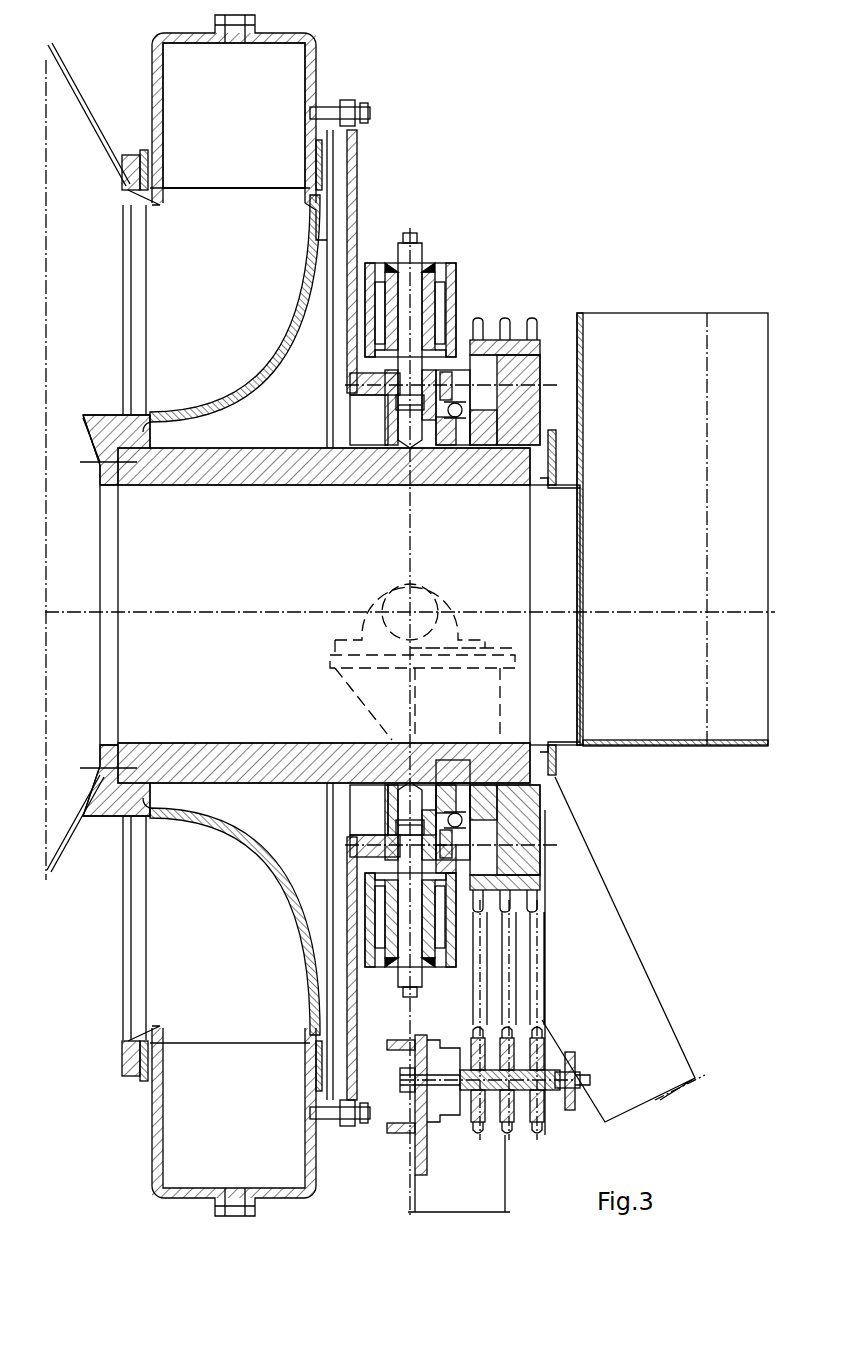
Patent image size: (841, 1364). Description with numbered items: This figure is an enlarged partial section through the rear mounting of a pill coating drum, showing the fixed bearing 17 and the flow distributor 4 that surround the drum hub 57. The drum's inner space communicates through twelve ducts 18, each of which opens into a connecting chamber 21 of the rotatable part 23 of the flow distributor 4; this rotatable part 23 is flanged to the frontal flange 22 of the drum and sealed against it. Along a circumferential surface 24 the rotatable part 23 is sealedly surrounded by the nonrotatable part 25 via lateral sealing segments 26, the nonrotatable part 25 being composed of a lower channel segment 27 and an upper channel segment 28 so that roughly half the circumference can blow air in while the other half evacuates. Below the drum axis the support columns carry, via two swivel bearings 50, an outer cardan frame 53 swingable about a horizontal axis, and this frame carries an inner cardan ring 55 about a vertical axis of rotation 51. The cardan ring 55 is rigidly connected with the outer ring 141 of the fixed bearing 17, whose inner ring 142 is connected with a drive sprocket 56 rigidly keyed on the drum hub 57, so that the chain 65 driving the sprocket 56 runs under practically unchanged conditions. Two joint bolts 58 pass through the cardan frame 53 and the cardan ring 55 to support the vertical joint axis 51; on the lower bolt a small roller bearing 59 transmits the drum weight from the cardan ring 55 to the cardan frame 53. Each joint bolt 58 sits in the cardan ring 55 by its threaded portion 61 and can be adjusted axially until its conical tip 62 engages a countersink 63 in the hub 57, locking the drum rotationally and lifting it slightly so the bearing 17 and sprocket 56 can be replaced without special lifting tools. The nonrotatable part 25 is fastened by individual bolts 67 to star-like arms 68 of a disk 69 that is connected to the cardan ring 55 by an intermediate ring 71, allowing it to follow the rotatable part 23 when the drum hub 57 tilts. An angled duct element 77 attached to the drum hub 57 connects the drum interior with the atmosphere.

The flow distributor 4 is at (345, 78).
The fixed bearing 17 is at (470, 411).
The ducts 18 is at (88, 461).
The connecting chamber 21 is at (231, 615).
The frontal flange 22 is at (123, 300).
The rotatable part 23 is at (130, 152).
The circumferential surface 24 is at (225, 190).
The nonrotatable part 25 is at (322, 42).
The lateral sealing segments 26 is at (140, 148).
The lower channel segment 27 is at (222, 1121).
The upper channel segment 28 is at (234, 115).
The swivel bearings 50 is at (440, 600).
The vertical axis of rotation 51 is at (412, 538).
The outer cardan frame 53 is at (458, 300).
The inner cardan ring 55 is at (386, 824).
The drive sprocket 56 is at (505, 436).
The drum hub 57 is at (356, 485).
The joint bolts 58 is at (418, 256).
The small roller bearing 59 is at (446, 866).
The threaded portion 61 is at (398, 805).
The conical tips 62 is at (428, 770).
The countersinks 63 is at (392, 760).
The chain 65 is at (540, 1020).
The bolts 67 is at (366, 110).
The arms 68 is at (358, 218).
The disk 69 is at (353, 252).
The intermediate ring 71 is at (368, 398).
The angled duct element 77 is at (655, 717).
The outer ring 141 is at (446, 396).
The inner ring 142 is at (446, 470).